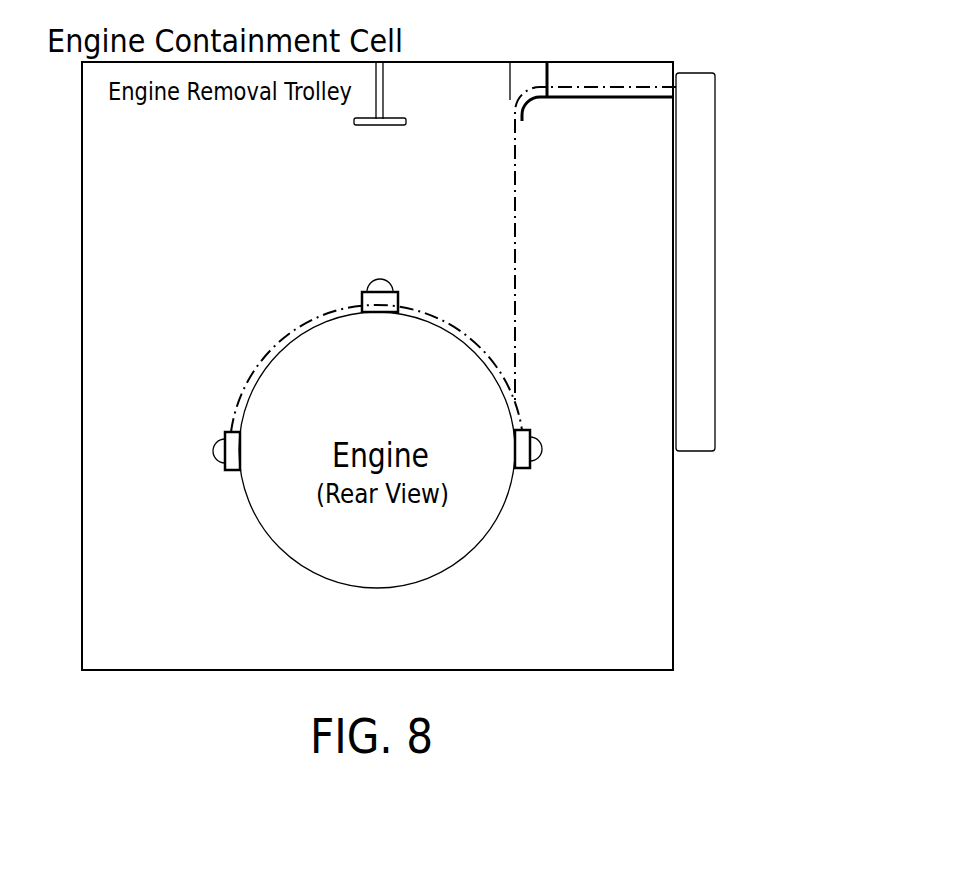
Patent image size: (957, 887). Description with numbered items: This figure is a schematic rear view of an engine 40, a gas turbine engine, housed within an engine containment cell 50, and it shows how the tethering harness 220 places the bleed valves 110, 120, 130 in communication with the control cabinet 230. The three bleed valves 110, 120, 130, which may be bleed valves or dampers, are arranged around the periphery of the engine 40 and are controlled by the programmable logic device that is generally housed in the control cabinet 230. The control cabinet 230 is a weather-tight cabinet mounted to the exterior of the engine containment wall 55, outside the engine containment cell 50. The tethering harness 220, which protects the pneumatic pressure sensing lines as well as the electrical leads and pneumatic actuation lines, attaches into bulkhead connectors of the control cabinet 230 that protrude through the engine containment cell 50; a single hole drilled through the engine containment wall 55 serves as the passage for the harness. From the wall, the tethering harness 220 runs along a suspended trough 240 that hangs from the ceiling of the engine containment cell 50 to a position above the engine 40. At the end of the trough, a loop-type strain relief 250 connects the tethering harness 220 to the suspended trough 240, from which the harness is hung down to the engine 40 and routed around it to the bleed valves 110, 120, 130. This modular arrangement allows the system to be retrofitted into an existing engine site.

The engine 40 is at (347, 450).
The engine containment cell 50 is at (377, 344).
The engine containment wall 55 is at (675, 485).
The bleed valve 110 is at (225, 432).
The bleed valve 120 is at (332, 281).
The bleed valve 130 is at (522, 462).
The tethering harness 220 is at (453, 259).
The control cabinet 230 is at (733, 262).
The suspended trough 240 is at (577, 98).
The loop-type strain relief 250 is at (510, 95).